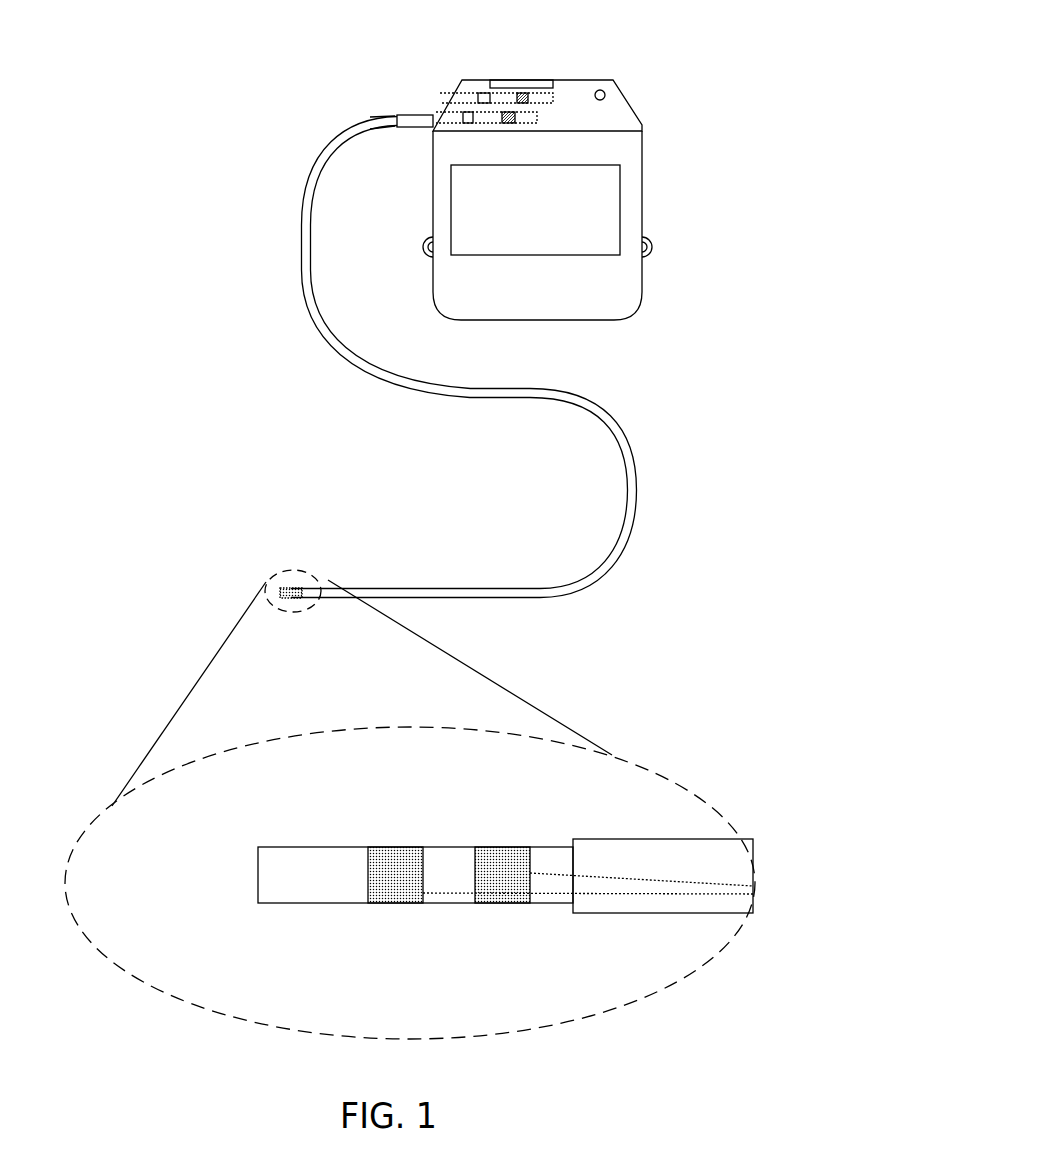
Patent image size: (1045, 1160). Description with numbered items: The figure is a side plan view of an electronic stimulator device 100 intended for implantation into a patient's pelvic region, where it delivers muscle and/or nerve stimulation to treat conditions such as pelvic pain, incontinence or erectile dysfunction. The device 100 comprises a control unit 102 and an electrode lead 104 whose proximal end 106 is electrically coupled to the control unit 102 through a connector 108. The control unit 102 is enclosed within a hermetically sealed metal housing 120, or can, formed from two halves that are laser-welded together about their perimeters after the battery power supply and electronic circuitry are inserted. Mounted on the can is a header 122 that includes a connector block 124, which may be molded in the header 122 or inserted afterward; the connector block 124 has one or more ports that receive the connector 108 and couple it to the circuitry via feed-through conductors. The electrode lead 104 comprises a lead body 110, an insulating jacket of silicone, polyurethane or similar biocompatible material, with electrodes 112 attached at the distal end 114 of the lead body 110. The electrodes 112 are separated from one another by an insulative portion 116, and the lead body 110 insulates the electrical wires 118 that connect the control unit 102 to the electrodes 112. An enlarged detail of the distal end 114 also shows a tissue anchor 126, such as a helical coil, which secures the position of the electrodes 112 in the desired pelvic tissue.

The electronic stimulator device 100 is at (708, 52).
The control unit 102 is at (620, 193).
The electrode lead 104 is at (628, 456).
The proximal end 106 is at (386, 117).
The connector 108 is at (420, 128).
The lead body 110 is at (612, 563).
The electrodes 112 is at (290, 588).
The distal end 114 is at (338, 583).
The insulative portion 116 is at (440, 903).
The electrical wires 118 is at (604, 878).
The metal housing 120 is at (622, 296).
The header 122 is at (573, 78).
The connector block 124 is at (462, 80).
The tissue anchor 126 is at (292, 847).